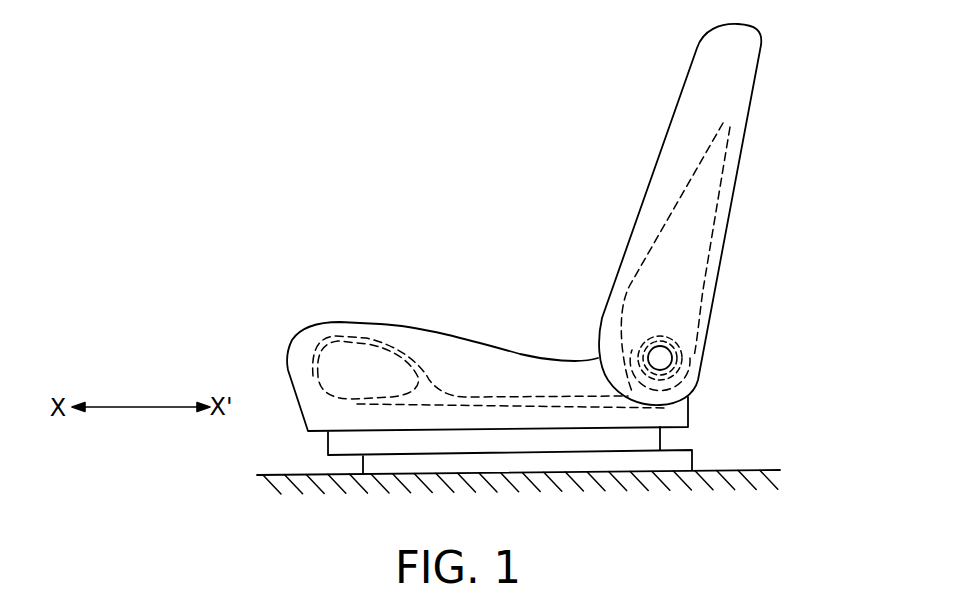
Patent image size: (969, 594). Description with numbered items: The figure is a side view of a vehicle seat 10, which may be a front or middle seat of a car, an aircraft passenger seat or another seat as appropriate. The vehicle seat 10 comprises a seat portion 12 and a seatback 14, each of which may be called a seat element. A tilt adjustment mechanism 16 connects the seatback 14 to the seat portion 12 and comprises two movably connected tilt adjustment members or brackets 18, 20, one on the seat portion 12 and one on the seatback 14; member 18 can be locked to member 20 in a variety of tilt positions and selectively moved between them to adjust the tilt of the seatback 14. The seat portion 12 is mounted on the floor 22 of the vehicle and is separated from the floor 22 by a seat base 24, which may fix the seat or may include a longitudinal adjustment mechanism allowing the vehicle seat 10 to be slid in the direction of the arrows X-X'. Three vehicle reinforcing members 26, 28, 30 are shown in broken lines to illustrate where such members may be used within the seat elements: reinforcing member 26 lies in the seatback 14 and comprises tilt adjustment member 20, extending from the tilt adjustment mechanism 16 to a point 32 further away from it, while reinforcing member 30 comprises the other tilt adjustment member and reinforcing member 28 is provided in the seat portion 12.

The vehicle seat 10 is at (548, 256).
The seat portion 12 is at (360, 338).
The seatback 14 is at (733, 127).
The tilt adjustment mechanism 16 is at (671, 330).
The tilt adjustment member 18 is at (660, 358).
The tilt adjustment member 20 is at (683, 353).
The floor 22 is at (770, 468).
The seat base 24 is at (712, 449).
The vehicle reinforcing member 26 is at (718, 208).
The vehicle reinforcing member 28 is at (313, 349).
The vehicle reinforcing member 30 is at (475, 397).
The point further away from the tilt adjustment mechanism 32 is at (722, 123).